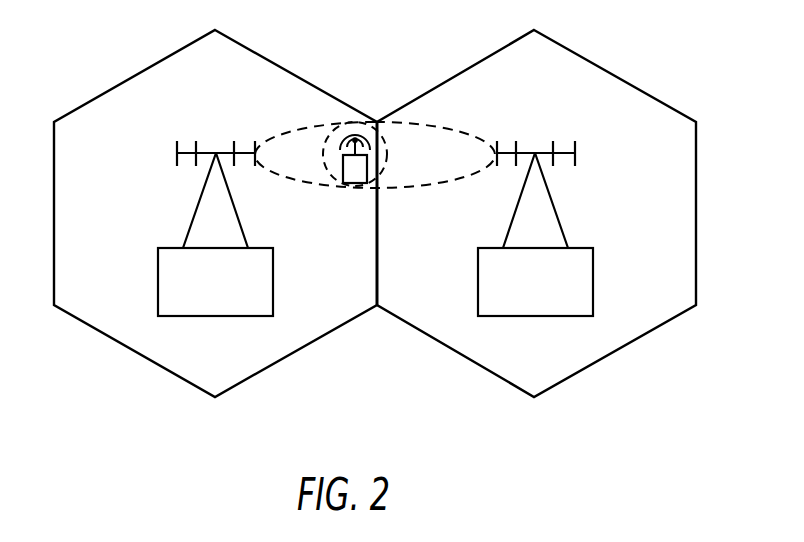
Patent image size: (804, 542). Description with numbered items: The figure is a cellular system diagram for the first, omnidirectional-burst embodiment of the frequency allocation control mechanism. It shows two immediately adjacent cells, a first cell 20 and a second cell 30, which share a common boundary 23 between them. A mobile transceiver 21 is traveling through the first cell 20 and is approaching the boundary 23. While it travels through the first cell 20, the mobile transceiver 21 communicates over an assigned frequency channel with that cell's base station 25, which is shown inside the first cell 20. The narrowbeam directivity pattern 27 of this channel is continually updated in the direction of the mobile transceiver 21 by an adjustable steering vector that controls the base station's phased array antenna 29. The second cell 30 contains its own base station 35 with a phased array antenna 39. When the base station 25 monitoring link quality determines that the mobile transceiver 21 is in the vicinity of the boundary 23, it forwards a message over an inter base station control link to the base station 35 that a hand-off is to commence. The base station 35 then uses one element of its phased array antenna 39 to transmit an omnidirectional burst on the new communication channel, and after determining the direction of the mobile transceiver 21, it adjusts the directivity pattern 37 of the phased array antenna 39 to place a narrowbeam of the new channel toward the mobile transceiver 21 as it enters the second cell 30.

The first cell 20 is at (262, 338).
The second cell 30 is at (620, 317).
The boundary 23 is at (377, 272).
The base station 25 is at (173, 248).
The phased array antenna 29 is at (177, 152).
The base station 35 is at (593, 268).
The phased array antenna 39 is at (577, 152).
The mobile transceiver 21 is at (353, 186).
The narrowbeam directivity pattern 27 is at (305, 127).
The directivity pattern 37 is at (430, 125).